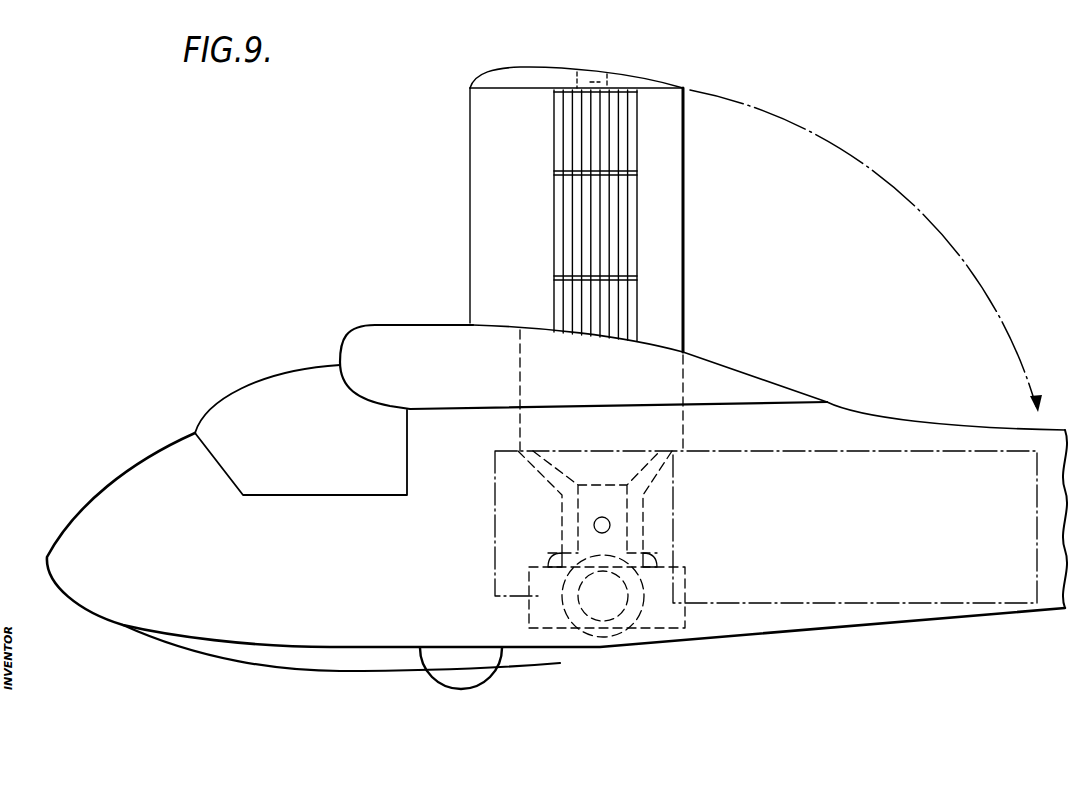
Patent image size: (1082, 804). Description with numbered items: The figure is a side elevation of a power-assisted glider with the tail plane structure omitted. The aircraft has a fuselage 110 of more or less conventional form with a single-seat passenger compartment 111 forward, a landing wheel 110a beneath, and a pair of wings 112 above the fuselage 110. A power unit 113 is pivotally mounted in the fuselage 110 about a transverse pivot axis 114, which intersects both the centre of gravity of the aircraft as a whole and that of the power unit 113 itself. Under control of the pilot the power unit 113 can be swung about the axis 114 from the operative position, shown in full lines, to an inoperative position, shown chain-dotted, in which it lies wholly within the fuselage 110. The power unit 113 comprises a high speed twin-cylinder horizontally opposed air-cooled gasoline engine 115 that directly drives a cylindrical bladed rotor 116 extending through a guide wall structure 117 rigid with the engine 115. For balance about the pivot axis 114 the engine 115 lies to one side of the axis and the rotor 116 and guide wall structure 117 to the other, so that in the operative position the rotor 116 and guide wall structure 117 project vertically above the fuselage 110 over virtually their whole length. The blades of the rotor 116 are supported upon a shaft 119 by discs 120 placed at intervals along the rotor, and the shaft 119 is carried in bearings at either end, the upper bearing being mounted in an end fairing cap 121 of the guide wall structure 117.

The fuselage 110 is at (767, 640).
The landing wheel 110a is at (448, 676).
The passenger compartment 111 is at (268, 410).
The wings 112 is at (387, 350).
The power unit 113 is at (552, 501).
The transverse pivot axis 114 is at (610, 525).
The engine 115 is at (600, 630).
The cylindrical bladed rotor 116 is at (610, 236).
The guide wall structure 117 is at (690, 170).
The shaft 119 is at (604, 82).
The discs 120 is at (568, 172).
The end fairing cap 121 is at (488, 73).